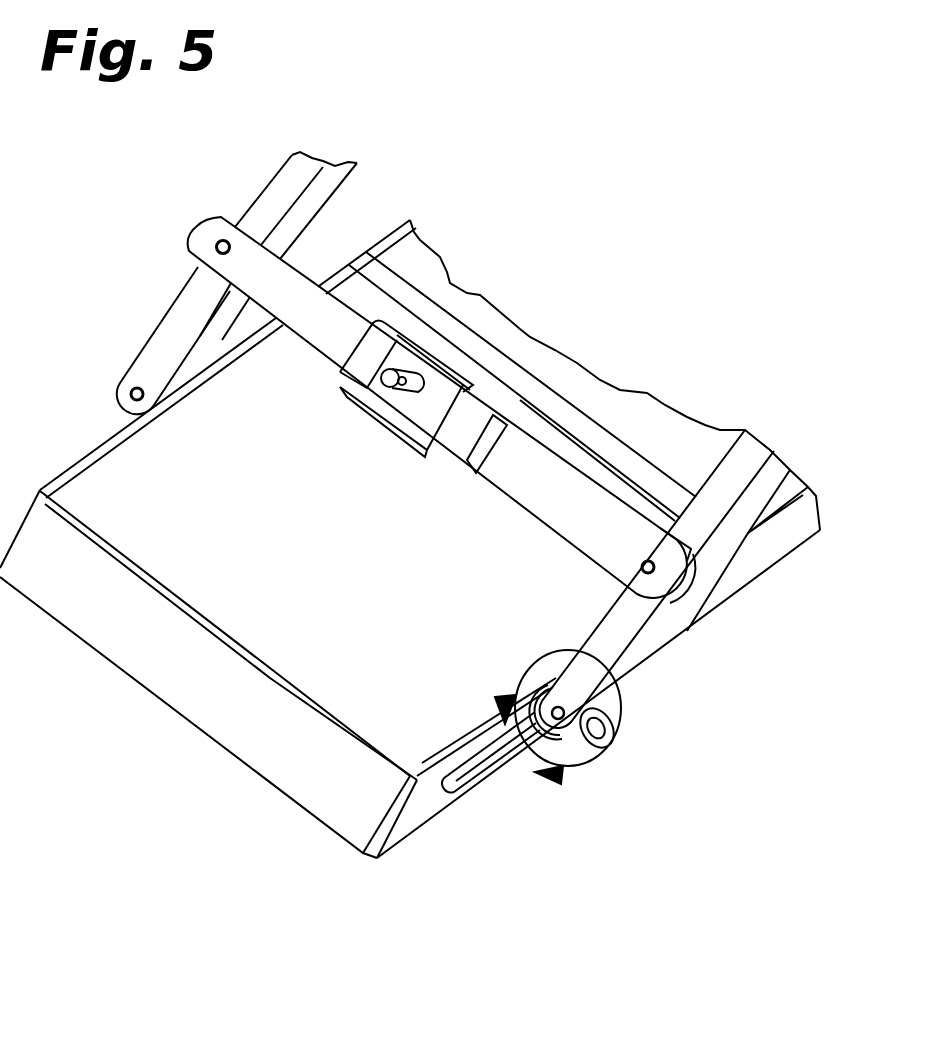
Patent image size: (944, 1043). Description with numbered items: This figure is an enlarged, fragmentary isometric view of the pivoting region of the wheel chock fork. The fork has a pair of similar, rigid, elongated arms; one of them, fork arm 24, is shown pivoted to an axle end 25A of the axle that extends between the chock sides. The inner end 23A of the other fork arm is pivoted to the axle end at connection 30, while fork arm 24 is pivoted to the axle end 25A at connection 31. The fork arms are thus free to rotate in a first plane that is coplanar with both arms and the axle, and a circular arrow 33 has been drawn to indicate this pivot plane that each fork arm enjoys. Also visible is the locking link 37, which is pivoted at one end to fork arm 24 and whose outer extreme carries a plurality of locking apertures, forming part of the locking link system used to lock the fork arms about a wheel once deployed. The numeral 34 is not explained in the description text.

The inner end of fork arm 23A is at (175, 343).
The connection 30 is at (131, 391).
The locking link 37 is at (553, 494).
The pivot pin 34 is at (652, 575).
The fork arm 24 is at (607, 648).
The circular arrow 33 is at (535, 658).
The axle end 25A is at (598, 748).
The connection 31 is at (560, 720).